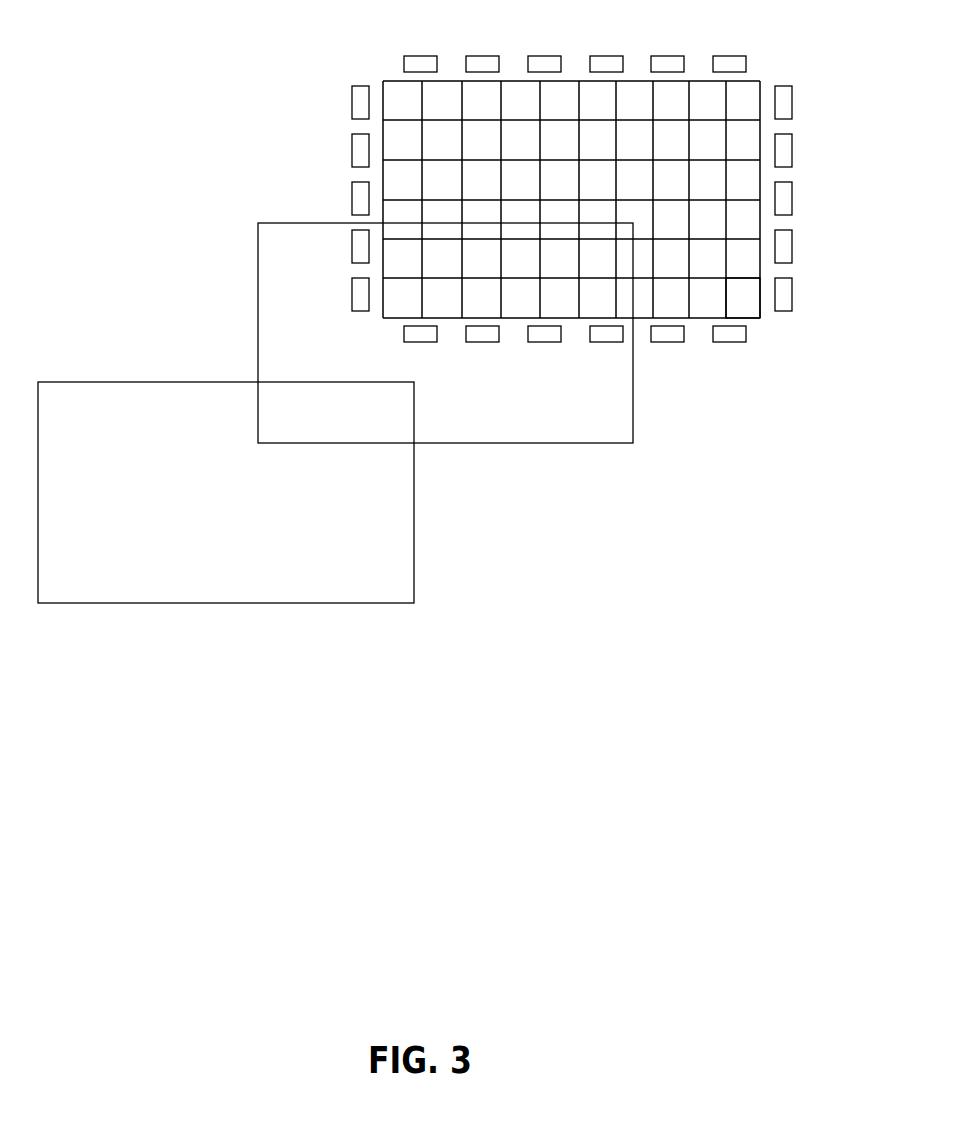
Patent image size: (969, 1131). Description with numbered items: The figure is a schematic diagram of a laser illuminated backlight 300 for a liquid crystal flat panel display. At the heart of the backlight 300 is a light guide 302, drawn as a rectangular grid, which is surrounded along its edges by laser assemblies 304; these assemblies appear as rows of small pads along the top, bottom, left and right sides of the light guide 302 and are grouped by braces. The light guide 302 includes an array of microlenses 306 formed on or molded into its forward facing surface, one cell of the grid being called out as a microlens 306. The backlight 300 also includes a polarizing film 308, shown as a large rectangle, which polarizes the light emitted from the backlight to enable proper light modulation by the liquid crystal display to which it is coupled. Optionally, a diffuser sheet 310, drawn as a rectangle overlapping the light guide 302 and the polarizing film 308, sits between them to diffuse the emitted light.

The laser illuminated backlight 300 is at (236, 97).
The light guide 302 is at (753, 80).
The laser assemblies 304 is at (743, 47).
The microlenses 306 is at (745, 265).
The polarizing film 308 is at (390, 556).
The diffuser sheet 310 is at (543, 427).